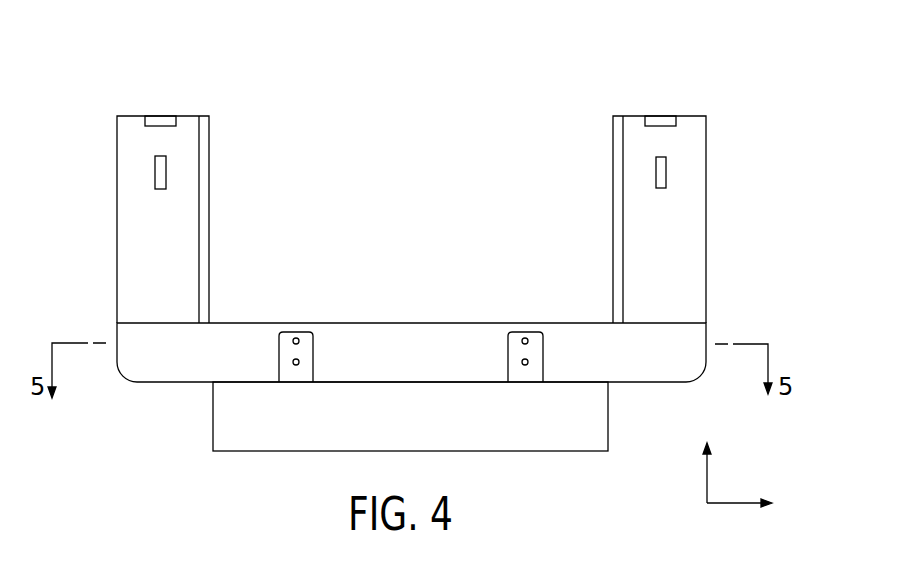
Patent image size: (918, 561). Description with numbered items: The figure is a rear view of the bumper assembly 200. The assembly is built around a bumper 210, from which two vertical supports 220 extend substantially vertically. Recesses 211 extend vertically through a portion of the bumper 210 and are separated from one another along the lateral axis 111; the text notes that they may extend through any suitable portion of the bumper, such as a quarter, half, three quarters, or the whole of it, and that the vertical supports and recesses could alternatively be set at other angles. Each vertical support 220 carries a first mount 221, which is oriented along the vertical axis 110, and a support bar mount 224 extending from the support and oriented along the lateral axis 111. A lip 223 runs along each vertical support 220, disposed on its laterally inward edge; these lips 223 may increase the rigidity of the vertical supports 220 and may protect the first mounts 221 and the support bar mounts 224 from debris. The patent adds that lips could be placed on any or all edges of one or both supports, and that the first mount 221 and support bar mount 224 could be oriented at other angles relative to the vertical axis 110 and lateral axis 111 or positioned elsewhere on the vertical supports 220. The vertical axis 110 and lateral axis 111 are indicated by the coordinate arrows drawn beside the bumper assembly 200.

The bumper assembly 200 is at (218, 45).
The bumper 210 is at (247, 323).
The recesses 211 is at (306, 342).
The vertical supports 220 is at (706, 222).
The first mounts 221 is at (160, 168).
The lip 223 is at (210, 218).
The support bar mount 224 is at (160, 119).
The vertical axis 110 is at (706, 476).
The lateral axis 111 is at (733, 504).